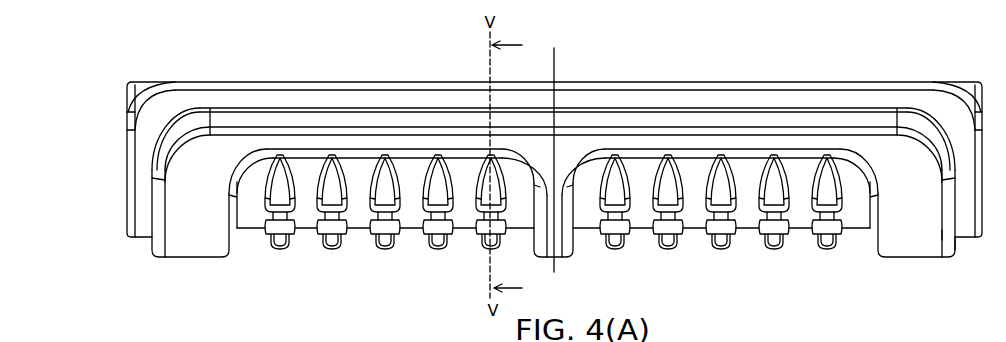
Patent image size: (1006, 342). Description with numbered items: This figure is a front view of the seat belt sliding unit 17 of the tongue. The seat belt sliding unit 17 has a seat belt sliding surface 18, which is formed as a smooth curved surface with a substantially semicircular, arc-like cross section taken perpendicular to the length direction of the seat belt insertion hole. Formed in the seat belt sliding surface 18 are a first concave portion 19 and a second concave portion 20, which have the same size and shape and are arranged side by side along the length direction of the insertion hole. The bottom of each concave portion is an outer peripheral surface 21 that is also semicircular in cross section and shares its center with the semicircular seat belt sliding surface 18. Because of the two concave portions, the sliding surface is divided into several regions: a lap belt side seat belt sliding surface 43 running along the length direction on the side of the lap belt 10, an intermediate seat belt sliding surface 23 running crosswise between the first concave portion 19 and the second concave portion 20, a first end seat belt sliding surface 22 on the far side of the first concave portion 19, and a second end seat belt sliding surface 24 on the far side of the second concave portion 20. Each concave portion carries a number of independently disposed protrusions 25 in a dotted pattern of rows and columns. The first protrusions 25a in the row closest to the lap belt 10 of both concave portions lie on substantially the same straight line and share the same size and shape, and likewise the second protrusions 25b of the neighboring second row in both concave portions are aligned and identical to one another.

The lap belt 10 is at (975, 339).
The seat belt sliding unit 17 is at (572, 142).
The seat belt sliding surface 18 is at (176, 220).
The first concave portion 19 is at (531, 238).
The second concave portion 20 is at (871, 240).
The outer peripheral surface 21 is at (257, 229).
The first end seat belt sliding surface 22 is at (192, 258).
The intermediate seat belt sliding surface 23 is at (567, 232).
The second end seat belt sliding surface 24 is at (908, 258).
The protrusions 25 is at (731, 263).
The first protrusions 25a is at (490, 154).
The second protrusions 25b is at (796, 278).
The lap belt side seat belt sliding surface 43 is at (750, 148).